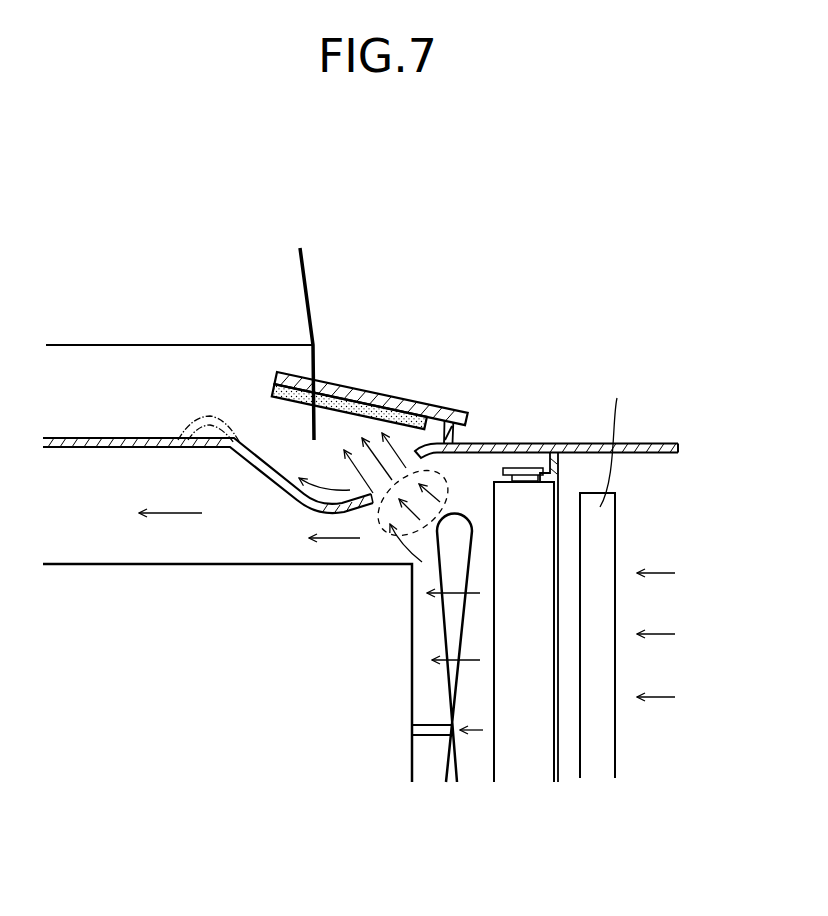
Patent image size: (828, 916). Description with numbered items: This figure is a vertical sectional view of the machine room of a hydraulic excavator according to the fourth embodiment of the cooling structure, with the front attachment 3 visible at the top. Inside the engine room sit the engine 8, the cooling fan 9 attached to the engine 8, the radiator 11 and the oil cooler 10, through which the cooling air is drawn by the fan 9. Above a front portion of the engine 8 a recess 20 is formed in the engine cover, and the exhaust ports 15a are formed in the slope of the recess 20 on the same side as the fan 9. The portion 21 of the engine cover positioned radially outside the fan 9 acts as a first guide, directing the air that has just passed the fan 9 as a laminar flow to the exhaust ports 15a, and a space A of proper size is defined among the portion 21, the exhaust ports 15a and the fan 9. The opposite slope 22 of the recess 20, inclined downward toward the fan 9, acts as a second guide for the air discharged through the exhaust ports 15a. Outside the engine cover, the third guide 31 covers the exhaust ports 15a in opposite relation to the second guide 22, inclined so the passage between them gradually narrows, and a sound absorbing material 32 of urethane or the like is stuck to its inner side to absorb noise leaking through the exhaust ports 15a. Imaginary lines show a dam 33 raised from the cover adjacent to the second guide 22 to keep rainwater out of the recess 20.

The front attachment 3 is at (283, 298).
The sound absorbing material 32 is at (348, 406).
The third guide 31 is at (388, 404).
The exhaust ports 15a is at (404, 455).
The portion of the engine cover 21 is at (503, 443).
The dam 33 is at (203, 418).
The opposite slope 22 is at (268, 482).
The recess 20 is at (333, 517).
The engine 8 is at (87, 562).
The cooling fan 9 is at (455, 555).
The radiator 11 is at (520, 767).
The oil cooler 10 is at (600, 755).
The space A is at (420, 509).